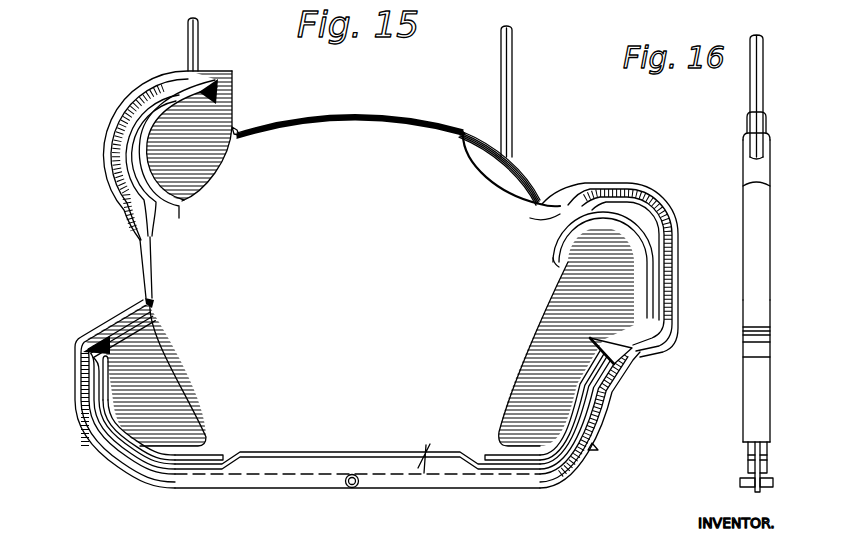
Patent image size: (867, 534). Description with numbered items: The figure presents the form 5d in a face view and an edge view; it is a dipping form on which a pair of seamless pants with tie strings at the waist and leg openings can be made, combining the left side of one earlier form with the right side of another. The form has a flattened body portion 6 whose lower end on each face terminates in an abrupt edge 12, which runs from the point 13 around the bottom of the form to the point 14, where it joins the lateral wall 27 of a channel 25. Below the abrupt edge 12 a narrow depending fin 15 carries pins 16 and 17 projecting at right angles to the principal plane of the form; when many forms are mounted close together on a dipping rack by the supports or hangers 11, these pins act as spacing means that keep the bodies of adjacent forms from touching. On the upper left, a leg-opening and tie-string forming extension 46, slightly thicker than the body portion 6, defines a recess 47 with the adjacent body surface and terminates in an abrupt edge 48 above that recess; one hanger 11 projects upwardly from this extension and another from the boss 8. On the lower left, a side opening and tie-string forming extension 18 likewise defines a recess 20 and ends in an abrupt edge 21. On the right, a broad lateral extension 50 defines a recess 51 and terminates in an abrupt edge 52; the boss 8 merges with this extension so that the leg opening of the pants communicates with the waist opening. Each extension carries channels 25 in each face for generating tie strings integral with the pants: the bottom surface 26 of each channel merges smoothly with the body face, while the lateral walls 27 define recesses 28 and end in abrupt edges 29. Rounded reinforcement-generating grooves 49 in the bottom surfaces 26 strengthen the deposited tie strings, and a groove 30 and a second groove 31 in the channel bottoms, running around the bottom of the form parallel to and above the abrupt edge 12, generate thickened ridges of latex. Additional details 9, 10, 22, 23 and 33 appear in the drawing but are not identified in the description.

In FIG. 15, the form 5d is at (461, 130).
In FIG. 16, the body portion 6 is at (770, 131).
In FIG. 15, the boss 8 is at (506, 170).
In FIG. 16, the boss 8 is at (770, 158).
In FIG. 15, the strand 9 is at (462, 131).
In FIG. 15, the heavy strand 10 is at (465, 133).
In FIG. 15, the support or hanger 11 is at (199, 45).
In FIG. 16, the support or hanger 11 is at (763, 72).
In FIG. 15, the abrupt edge 12 is at (420, 449).
In FIG. 16, the abrupt edge 12 is at (748, 468).
In FIG. 15, the point 13 is at (118, 443).
In FIG. 15, the point 14 is at (593, 449).
In FIG. 16, the point 14 is at (771, 444).
In FIG. 15, the depending fin 15 is at (441, 482).
In FIG. 16, the depending fin 15 is at (761, 490).
In FIG. 15, the pin 16 is at (347, 486).
In FIG. 16, the pin 16 is at (740, 484).
In FIG. 16, the pin 17 is at (773, 481).
In FIG. 15, the side opening and tie-string forming extension 18 is at (102, 324).
In FIG. 15, the recess 20 is at (145, 300).
In FIG. 15, the abrupt edge 21 is at (158, 346).
In FIG. 15, the upper band 22 is at (325, 121).
In FIG. 16, the upper band 22 is at (767, 120).
In FIG. 15, the connecting strip 23 is at (141, 268).
In FIG. 15, the channel 25 is at (218, 79).
In FIG. 15, the bottom surface 26 is at (140, 129).
In FIG. 15, the lateral wall 27 is at (113, 143).
In FIG. 15, the recess 28 is at (118, 162).
In FIG. 15, the abrupt edge 29 is at (111, 184).
In FIG. 15, the groove 30 is at (384, 455).
In FIG. 15, the second groove 31 is at (216, 451).
In FIG. 15, the raised band 33 is at (282, 456).
In FIG. 15, the leg-opening and tie-string forming extension 46 is at (167, 80).
In FIG. 15, the recess 47 is at (243, 133).
In FIG. 15, the abrupt edge 48 is at (236, 131).
In FIG. 15, the rounded reinforcement-generating groove 49 is at (553, 257).
In FIG. 15, the broad lateral extension 50 is at (627, 184).
In FIG. 16, the broad lateral extension 50 is at (765, 280).
In FIG. 15, the recess 51 is at (545, 343).
In FIG. 15, the abrupt edge 52 is at (554, 318).